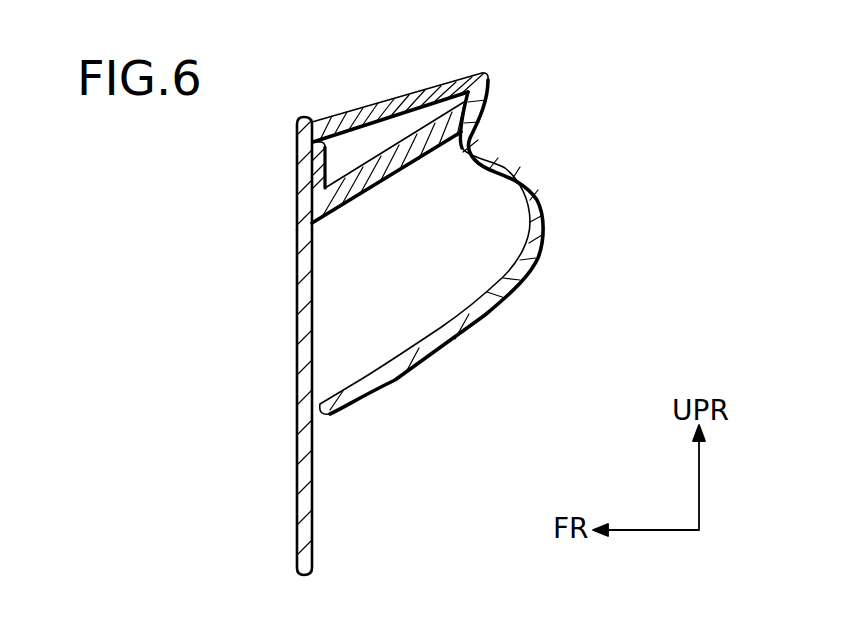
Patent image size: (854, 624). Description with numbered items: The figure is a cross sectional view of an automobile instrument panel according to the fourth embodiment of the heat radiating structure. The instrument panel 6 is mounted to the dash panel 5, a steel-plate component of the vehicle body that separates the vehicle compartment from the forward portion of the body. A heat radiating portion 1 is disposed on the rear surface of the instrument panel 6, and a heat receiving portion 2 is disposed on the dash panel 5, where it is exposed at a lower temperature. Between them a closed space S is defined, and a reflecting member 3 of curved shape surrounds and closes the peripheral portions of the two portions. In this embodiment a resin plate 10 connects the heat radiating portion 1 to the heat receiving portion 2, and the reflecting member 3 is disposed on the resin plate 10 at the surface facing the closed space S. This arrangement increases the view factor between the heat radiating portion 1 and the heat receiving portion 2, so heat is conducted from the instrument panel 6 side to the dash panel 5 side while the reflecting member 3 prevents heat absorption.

The heat radiating portion 1 is at (430, 92).
The heat receiving portion 2 is at (307, 172).
The reflecting member 3 is at (403, 157).
The dash panel 5 is at (300, 472).
The instrument panel 6 is at (387, 102).
The resin plate 10 is at (476, 126).
The closed space S is at (347, 133).